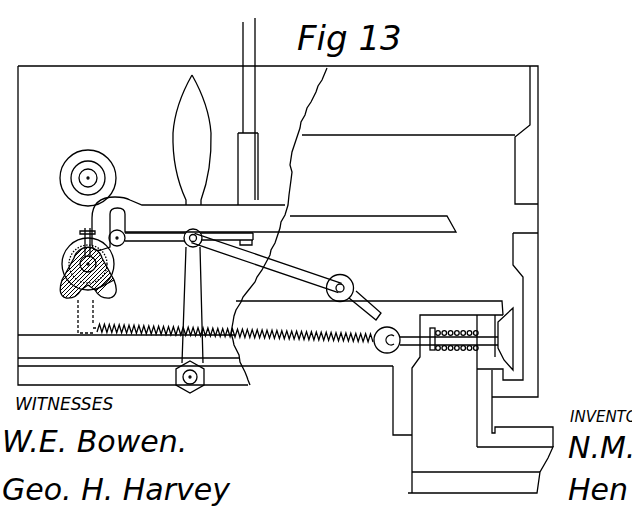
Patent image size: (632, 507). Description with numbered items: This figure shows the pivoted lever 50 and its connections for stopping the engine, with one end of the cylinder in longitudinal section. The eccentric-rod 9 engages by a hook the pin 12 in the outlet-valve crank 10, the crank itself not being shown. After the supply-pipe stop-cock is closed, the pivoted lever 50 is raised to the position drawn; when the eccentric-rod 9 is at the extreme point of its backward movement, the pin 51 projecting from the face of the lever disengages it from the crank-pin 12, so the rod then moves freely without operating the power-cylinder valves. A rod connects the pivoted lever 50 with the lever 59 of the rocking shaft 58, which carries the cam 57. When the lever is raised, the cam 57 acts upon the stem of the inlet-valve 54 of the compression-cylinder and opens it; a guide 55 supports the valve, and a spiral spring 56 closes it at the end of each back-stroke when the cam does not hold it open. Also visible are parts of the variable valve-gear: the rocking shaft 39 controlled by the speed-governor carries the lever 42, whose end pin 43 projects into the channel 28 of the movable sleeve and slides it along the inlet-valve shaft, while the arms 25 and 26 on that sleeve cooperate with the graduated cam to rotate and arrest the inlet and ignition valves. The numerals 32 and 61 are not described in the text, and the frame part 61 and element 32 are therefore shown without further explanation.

The eccentric-rod 9 is at (274, 162).
The outlet-valve crank 10 is at (107, 178).
The pin 12 is at (127, 242).
The arm 25 is at (110, 297).
The arm 26 is at (78, 280).
The channel 28 is at (72, 258).
The stop 32 is at (87, 316).
The rocking shaft 39 is at (248, 100).
The lever 42 is at (189, 244).
The pin 43 is at (90, 240).
The pivoted lever 50 is at (190, 320).
The pin 51 is at (188, 243).
The inlet-valve 54 is at (506, 339).
The guide 55 is at (486, 336).
The spiral spring 56 is at (457, 333).
The cam 57 is at (393, 332).
The rocking shaft 58 is at (235, 334).
The lever 59 is at (362, 302).
The frame 61 is at (480, 404).